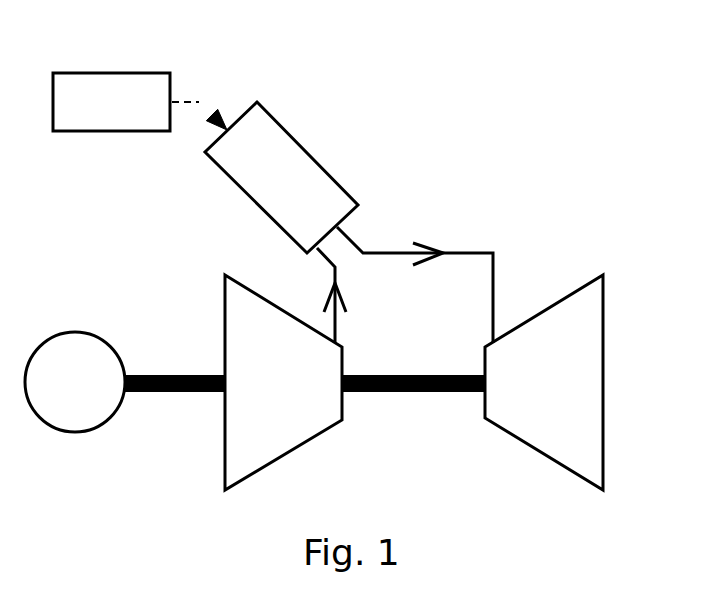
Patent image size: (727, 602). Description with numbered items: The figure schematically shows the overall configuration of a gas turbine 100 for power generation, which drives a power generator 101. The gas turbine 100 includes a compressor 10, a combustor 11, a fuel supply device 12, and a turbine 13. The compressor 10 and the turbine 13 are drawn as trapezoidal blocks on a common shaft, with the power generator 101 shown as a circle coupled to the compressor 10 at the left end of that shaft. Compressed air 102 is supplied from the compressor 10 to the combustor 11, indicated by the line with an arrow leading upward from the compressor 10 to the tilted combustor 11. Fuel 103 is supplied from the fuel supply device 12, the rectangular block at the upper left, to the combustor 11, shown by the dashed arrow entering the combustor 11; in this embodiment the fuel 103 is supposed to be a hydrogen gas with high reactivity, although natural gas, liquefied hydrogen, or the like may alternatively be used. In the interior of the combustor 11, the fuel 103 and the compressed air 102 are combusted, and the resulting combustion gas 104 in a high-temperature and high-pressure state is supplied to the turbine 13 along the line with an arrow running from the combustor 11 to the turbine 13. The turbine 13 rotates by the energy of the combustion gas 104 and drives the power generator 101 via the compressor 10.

The gas turbine 100 is at (602, 103).
The compressor 10 is at (303, 433).
The combustor 11 is at (323, 163).
The fuel supply device 12 is at (126, 72).
The turbine 13 is at (528, 438).
The power generator 101 is at (72, 425).
The compressed air 102 is at (338, 328).
The fuel 103 is at (204, 107).
The combustion gas 104 is at (495, 262).